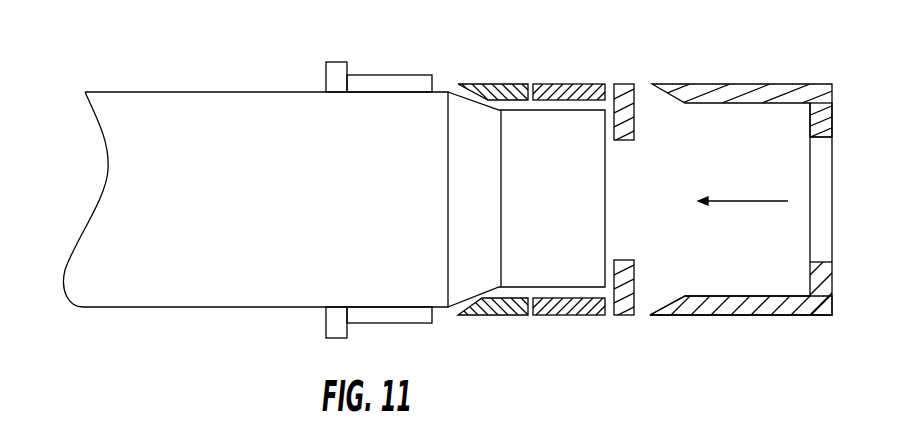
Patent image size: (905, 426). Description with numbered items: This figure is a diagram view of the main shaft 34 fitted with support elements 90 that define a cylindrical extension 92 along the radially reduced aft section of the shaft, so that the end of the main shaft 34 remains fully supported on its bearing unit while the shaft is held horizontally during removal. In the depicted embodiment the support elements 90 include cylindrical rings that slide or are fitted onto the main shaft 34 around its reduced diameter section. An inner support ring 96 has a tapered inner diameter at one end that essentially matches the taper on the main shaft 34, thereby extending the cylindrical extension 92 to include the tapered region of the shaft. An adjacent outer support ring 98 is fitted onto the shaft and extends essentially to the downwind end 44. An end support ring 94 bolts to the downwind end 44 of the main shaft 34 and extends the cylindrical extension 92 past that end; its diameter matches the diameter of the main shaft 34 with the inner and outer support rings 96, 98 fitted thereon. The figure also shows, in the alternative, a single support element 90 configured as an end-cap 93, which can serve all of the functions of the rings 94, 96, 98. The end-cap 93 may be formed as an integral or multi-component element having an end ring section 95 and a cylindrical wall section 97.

The main shaft 34 is at (192, 290).
The extension 92 is at (633, 67).
The downwind end 44 is at (605, 217).
The outer support ring 98 is at (578, 99).
The inner support ring 96 is at (510, 297).
The end support ring 94 is at (633, 280).
The support elements 90 is at (539, 342).
The end-cap 93 is at (735, 185).
The end ring section 95 is at (832, 108).
The cylindrical wall section 97 is at (737, 315).